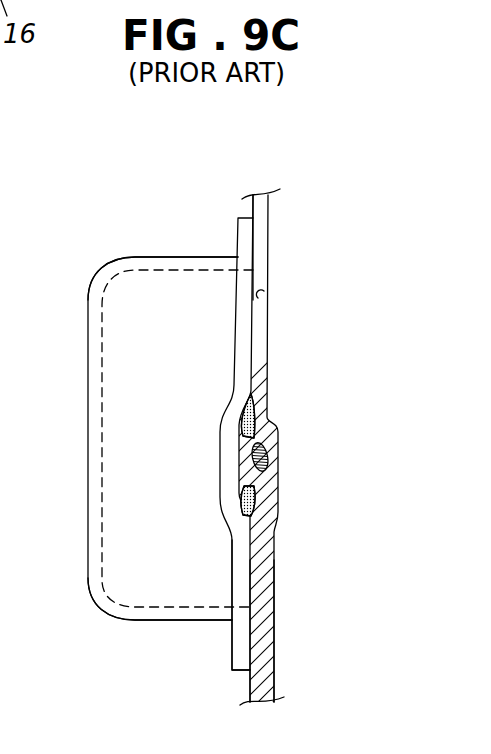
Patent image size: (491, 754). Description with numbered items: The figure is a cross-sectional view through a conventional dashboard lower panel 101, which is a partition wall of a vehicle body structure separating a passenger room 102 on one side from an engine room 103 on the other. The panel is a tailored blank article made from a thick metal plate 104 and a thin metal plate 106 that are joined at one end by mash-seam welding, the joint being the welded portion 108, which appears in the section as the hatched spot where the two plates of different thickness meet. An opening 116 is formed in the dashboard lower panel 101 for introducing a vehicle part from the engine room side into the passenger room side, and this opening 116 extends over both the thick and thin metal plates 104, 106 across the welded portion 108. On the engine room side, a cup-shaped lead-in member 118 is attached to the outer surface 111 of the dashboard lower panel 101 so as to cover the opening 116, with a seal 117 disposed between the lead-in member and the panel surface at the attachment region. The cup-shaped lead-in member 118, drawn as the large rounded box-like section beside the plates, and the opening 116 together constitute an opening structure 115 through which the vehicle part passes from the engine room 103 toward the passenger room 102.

The dashboard lower panel 101 is at (252, 191).
The passenger room 102 is at (327, 192).
The engine room 103 is at (115, 208).
The thick metal plate 104 is at (277, 677).
The thin metal plate 106 is at (270, 229).
The welded portion 108 is at (277, 451).
The outer surface 111 is at (245, 565).
The opening structure 115 is at (159, 248).
The opening 116 is at (263, 296).
The seal 117 is at (250, 411).
The cup-shaped lead-in member 118 is at (85, 580).